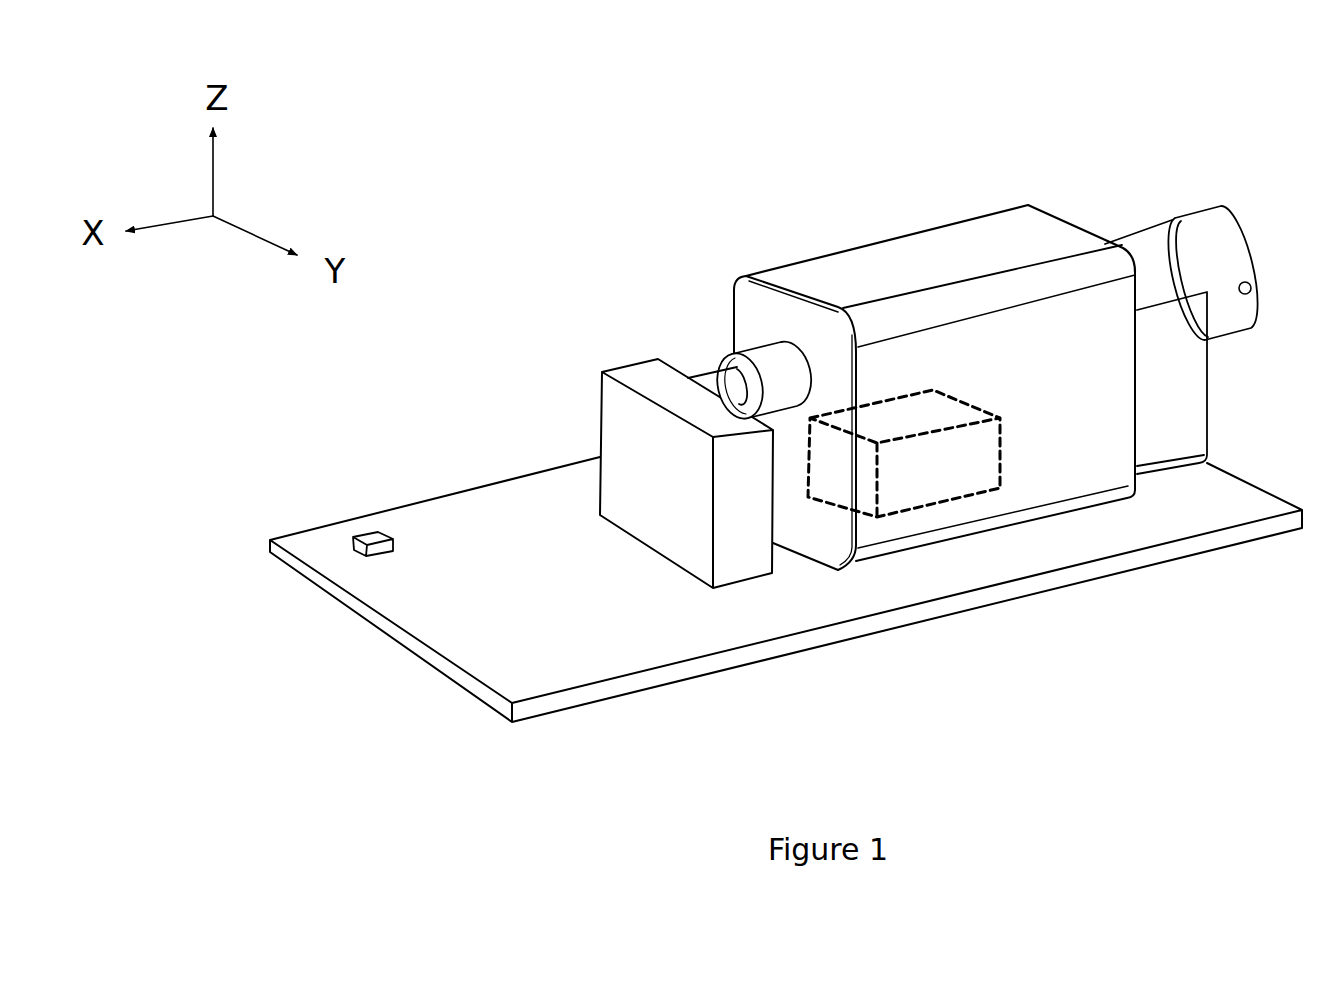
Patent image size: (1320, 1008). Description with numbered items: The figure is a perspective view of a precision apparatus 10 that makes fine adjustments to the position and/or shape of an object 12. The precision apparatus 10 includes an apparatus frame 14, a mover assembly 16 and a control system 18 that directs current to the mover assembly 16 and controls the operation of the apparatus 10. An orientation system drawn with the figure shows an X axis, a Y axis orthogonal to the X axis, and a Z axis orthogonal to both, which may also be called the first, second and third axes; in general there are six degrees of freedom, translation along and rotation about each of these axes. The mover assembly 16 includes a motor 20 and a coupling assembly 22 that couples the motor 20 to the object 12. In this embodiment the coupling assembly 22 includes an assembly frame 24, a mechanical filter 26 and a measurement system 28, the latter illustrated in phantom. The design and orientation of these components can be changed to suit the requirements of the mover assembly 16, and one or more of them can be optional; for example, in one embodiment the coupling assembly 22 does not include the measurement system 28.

The precision apparatus 10 is at (1110, 174).
The object 12 is at (645, 375).
The apparatus frame 14 is at (833, 603).
The mover assembly 16 is at (1184, 420).
The control system 18 is at (370, 535).
The motor 20 is at (1172, 363).
The coupling assembly 22 is at (803, 273).
The assembly frame 24 is at (865, 272).
The mechanical filter 26 is at (706, 362).
The measurement system 28 is at (973, 470).